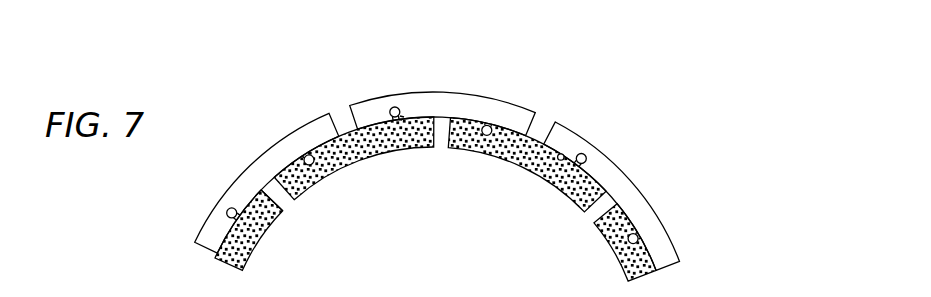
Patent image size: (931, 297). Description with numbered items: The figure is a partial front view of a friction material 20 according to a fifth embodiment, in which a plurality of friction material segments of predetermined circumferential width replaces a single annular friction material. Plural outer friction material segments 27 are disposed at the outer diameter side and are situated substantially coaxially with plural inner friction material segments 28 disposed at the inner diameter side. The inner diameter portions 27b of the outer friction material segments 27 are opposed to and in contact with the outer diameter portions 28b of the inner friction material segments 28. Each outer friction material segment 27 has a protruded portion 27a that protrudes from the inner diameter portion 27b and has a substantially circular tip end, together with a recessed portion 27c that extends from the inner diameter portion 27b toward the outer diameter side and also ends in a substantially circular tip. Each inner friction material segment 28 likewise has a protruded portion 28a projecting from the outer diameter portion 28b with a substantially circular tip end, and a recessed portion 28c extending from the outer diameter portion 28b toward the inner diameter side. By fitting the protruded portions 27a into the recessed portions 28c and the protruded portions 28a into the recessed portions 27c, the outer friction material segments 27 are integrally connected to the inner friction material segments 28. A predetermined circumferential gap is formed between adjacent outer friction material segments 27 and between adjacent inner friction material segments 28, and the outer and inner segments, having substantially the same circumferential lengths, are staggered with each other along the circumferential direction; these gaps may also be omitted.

The friction material 20 is at (745, 168).
The outer friction material segment 27 is at (247, 186).
The protruded portion 27a is at (482, 148).
The inner diameter portion 27b is at (563, 153).
The recessed portion 27c is at (404, 116).
The inner friction material segment 28 is at (577, 192).
The protruded portion 28a is at (393, 107).
The outer diameter portion 28b is at (420, 119).
The recessed portion 28c is at (305, 180).